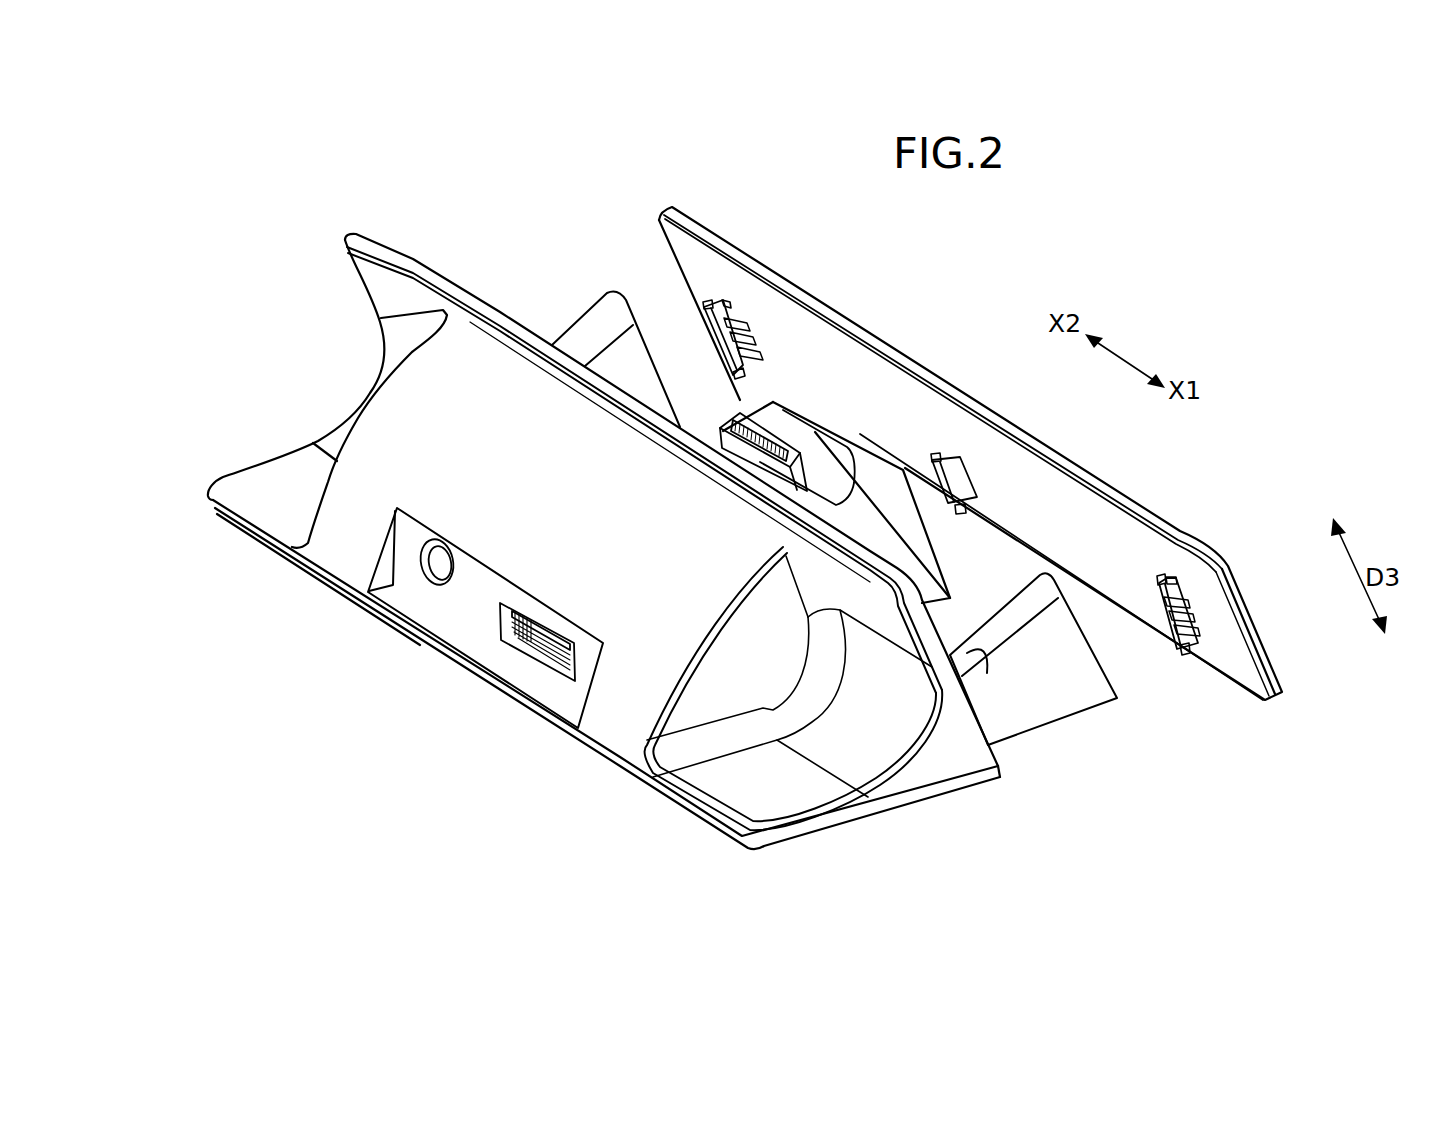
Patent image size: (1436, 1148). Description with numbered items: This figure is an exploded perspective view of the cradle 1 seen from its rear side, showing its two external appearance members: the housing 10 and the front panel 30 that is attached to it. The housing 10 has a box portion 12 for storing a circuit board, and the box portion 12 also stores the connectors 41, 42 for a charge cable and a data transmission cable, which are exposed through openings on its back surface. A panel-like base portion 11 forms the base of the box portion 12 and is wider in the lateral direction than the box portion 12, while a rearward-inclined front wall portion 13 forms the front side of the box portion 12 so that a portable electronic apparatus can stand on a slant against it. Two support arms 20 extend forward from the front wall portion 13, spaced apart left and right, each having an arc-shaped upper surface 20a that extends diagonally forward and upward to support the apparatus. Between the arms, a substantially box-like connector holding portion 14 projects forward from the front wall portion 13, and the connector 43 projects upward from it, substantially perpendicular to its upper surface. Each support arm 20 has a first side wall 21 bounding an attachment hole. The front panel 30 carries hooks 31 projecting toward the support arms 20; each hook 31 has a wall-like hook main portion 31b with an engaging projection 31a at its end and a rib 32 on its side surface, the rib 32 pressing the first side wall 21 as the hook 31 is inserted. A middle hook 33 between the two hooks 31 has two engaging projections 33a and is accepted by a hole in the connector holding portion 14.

The cradle 1 is at (524, 212).
The housing 10 is at (352, 220).
The base portion 11 is at (804, 805).
The box portion 12 is at (525, 560).
The front wall portion 13 is at (657, 424).
The connector holding portion 14 is at (821, 441).
The support arm 20 is at (634, 292).
The upper surface 20a is at (583, 327).
The first side wall 21 is at (1043, 710).
The front panel 30 is at (928, 370).
The hook 31 is at (723, 334).
The engaging projection 31a is at (708, 306).
The hook main portion 31b is at (726, 304).
The rib 32 is at (748, 325).
The middle hook 33 is at (962, 475).
The engaging projection 33a is at (937, 457).
The connector 41 is at (434, 563).
The connector 42 is at (553, 643).
The connector 43 is at (780, 402).